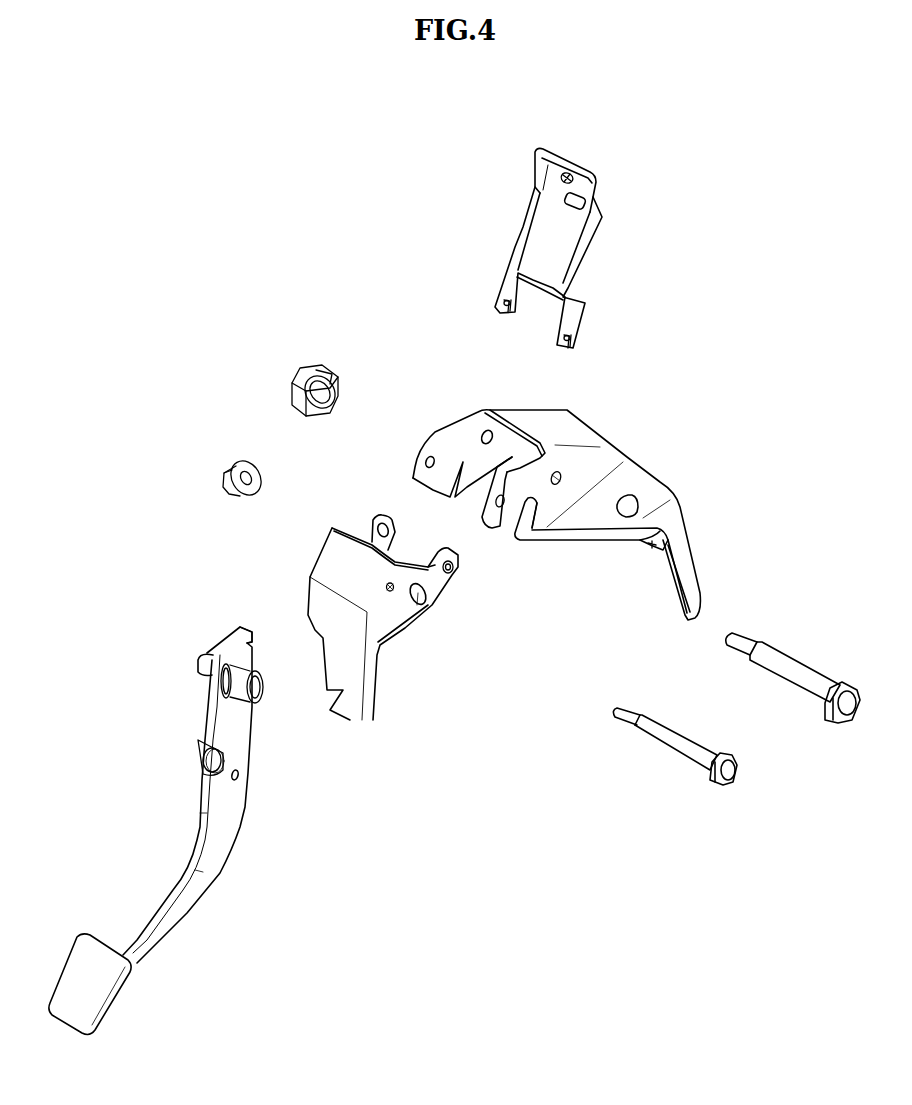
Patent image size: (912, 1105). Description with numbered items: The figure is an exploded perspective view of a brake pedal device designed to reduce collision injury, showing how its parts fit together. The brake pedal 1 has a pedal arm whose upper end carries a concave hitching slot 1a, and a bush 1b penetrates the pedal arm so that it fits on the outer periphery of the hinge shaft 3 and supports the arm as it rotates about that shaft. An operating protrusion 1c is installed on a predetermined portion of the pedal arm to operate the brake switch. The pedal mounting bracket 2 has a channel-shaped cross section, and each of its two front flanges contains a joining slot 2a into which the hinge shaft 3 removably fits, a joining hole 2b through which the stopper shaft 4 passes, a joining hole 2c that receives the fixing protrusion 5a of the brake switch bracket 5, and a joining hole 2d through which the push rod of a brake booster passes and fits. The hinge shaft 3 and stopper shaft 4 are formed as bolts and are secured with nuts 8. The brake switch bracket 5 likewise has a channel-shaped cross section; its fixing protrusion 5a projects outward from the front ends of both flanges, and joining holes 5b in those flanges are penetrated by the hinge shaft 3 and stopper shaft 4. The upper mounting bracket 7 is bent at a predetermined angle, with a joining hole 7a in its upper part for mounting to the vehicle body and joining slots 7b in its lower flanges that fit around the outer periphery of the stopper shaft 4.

The brake pedal 1 is at (180, 823).
The hitching slot 1a is at (250, 626).
The bush 1b is at (258, 688).
The operating protrusion 1c is at (205, 760).
The pedal mounting bracket 2 is at (697, 505).
The joining slot 2a is at (528, 510).
The joining hole 2b is at (500, 510).
The joining hole 2c is at (563, 481).
The joining hole 2d is at (652, 548).
The hinge shaft 3 is at (795, 699).
The stopper shaft 4 is at (677, 760).
The brake switch bracket 5 is at (383, 617).
The fixing protrusion 5a is at (450, 573).
The joining holes 5b is at (391, 592).
The upper mounting bracket 7 is at (608, 198).
The joining hole 7a is at (563, 168).
The joining slots 7b is at (518, 320).
The nuts 8 is at (290, 383).